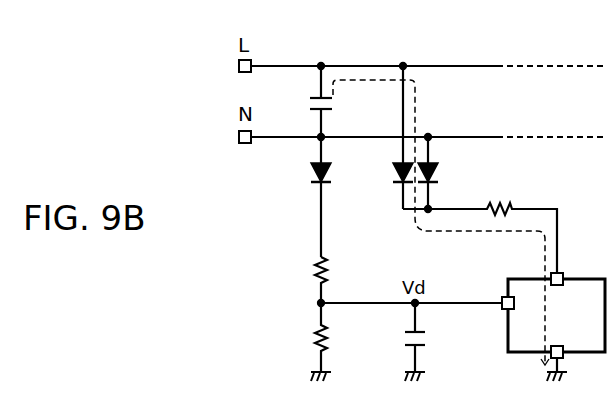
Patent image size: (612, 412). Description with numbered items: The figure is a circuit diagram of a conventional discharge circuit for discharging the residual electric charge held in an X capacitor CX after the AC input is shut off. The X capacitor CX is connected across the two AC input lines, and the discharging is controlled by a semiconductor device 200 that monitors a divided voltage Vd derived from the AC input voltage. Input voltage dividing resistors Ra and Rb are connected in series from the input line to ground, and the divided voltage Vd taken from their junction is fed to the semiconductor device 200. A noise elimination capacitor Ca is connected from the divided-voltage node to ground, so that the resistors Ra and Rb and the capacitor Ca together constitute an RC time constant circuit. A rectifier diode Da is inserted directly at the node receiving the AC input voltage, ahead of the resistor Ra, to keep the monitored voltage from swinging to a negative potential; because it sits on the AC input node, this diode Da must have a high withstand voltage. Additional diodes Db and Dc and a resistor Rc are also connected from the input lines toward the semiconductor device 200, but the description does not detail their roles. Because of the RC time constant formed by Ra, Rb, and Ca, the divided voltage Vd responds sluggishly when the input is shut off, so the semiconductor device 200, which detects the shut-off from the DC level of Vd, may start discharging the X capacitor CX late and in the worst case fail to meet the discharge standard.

The semiconductor device 200 is at (589, 278).
The X capacitor CX is at (343, 102).
The rectifier diode Da is at (299, 197).
The diode Db is at (382, 136).
The diode Dc is at (448, 173).
The resistor Rc is at (497, 200).
The input voltage dividing resistor Ra is at (298, 280).
The input voltage dividing resistor Rb is at (300, 342).
The noise elimination capacitor Ca is at (394, 341).